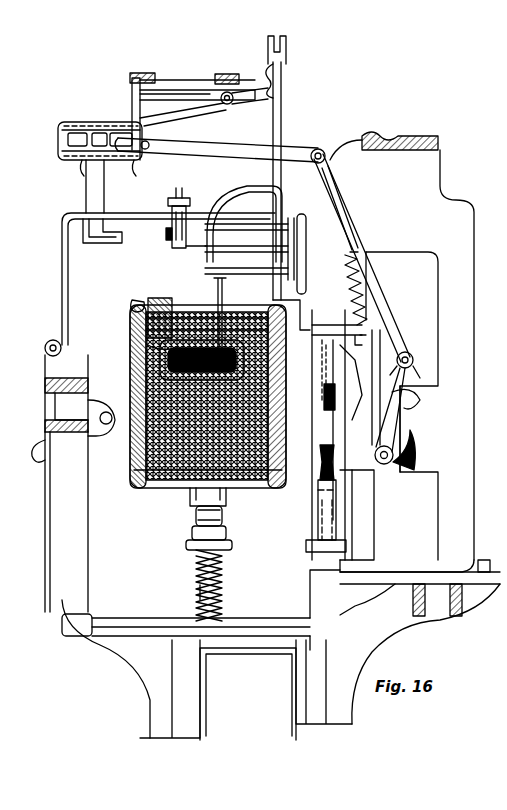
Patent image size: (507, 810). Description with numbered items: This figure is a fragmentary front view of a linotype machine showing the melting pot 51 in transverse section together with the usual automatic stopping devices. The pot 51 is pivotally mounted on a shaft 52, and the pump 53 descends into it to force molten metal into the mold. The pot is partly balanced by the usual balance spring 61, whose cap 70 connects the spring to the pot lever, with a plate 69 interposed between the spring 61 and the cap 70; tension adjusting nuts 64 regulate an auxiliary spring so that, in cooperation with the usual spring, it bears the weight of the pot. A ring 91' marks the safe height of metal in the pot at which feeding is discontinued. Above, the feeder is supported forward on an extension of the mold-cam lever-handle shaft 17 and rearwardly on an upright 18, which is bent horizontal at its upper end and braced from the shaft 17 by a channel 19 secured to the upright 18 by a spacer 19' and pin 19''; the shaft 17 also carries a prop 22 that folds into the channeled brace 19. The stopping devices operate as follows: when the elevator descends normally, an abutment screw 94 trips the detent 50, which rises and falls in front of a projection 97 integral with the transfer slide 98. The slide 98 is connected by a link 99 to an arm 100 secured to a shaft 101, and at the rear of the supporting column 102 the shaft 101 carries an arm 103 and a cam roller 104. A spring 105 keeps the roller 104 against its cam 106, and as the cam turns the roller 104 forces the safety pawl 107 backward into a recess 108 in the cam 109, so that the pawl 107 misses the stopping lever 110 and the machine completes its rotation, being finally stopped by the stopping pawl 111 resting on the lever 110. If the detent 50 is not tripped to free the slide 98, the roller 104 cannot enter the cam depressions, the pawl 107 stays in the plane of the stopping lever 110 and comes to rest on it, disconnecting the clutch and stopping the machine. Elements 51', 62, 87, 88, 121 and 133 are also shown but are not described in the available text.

The shaft 17 is at (198, 250).
The upright 18 is at (282, 100).
The channel 19 is at (193, 218).
The spacer 19' is at (192, 208).
The pin 19'' is at (179, 205).
The prop 22 is at (166, 234).
The detent 50 is at (240, 98).
The melting pot 51 is at (235, 503).
The piston 51' is at (202, 347).
The shaft 52 is at (170, 620).
The pump 53 is at (224, 302).
The balance spring 61 is at (226, 580).
The cylinder 62 is at (132, 470).
The tension adjusting nuts 64 is at (196, 588).
The plate 69 is at (232, 548).
The cap 70 is at (200, 540).
The cap 87 is at (160, 306).
The ring 88 is at (136, 306).
The ring 91' is at (178, 354).
The abutment screw 94 is at (272, 70).
The projection 97 is at (136, 112).
The transfer slide 98 is at (58, 140).
The link 99 is at (290, 150).
The arm 100 is at (372, 286).
The shaft 101 is at (408, 350).
The supporting column 102 is at (402, 352).
The arm 103 is at (400, 405).
The cam roller 104 is at (392, 464).
The spring 105 is at (348, 296).
The cam 106 is at (370, 500).
The safety pawl 107 is at (326, 392).
The recess 108 is at (324, 397).
The cam 109 is at (322, 360).
The stopping lever 110 is at (320, 465).
The stopping pawl 111 is at (330, 338).
The cylinder bottom 121 is at (136, 486).
The bracket 133 is at (45, 390).